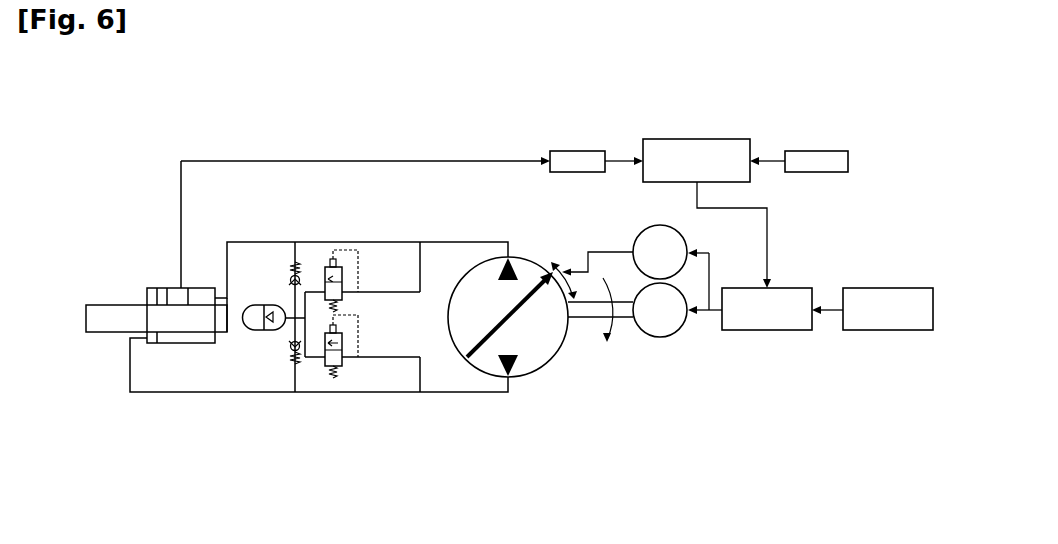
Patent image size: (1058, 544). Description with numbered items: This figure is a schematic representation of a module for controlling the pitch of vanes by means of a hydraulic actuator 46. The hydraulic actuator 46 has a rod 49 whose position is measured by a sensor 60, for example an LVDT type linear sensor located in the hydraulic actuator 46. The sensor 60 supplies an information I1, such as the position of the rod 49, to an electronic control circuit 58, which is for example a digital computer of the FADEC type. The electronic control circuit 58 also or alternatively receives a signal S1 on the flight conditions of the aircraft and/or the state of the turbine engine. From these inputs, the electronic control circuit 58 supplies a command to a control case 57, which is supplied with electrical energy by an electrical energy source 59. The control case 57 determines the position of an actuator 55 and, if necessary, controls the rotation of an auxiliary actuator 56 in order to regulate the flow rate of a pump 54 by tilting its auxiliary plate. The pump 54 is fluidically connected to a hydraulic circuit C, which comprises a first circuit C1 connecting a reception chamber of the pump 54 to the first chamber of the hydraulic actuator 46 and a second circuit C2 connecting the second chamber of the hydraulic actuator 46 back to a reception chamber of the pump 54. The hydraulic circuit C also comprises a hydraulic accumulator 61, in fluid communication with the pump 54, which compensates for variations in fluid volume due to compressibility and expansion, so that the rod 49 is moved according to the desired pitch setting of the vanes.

The hydraulic actuator 46 is at (142, 286).
The rod 49 is at (98, 313).
The sensor 60 is at (173, 287).
The hydraulic accumulator 61 is at (249, 360).
The hydraulic circuit C is at (358, 381).
The first circuit C1 is at (441, 394).
The second circuit C2 is at (373, 242).
The pump 54 is at (525, 382).
The actuator 55 is at (658, 238).
The auxiliary actuator 56 is at (663, 322).
The control case 57 is at (757, 320).
The electronic control circuit 58 is at (698, 139).
The electrical energy source 59 is at (893, 322).
The information I1 is at (578, 151).
The signal S1 is at (820, 151).